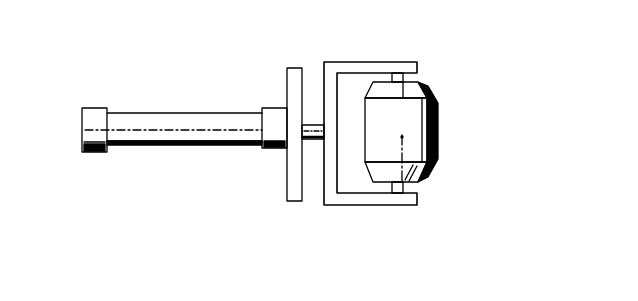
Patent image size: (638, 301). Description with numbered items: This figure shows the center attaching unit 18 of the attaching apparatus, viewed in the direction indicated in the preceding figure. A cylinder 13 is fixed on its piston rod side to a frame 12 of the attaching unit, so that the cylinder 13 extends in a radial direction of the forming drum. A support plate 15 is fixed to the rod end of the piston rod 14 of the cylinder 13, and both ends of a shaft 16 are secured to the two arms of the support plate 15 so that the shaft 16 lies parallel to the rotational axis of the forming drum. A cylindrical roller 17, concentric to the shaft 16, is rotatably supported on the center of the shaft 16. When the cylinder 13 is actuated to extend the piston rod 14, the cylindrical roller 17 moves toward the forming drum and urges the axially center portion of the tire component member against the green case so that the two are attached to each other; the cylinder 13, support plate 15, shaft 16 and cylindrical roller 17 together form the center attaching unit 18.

The frame 12 is at (292, 192).
The cylinder 13 is at (165, 123).
The piston rod 14 is at (312, 142).
The support plate 15 is at (366, 62).
The shaft 16 is at (414, 78).
The cylindrical roller 17 is at (438, 143).
The center attaching unit 18 is at (222, 108).